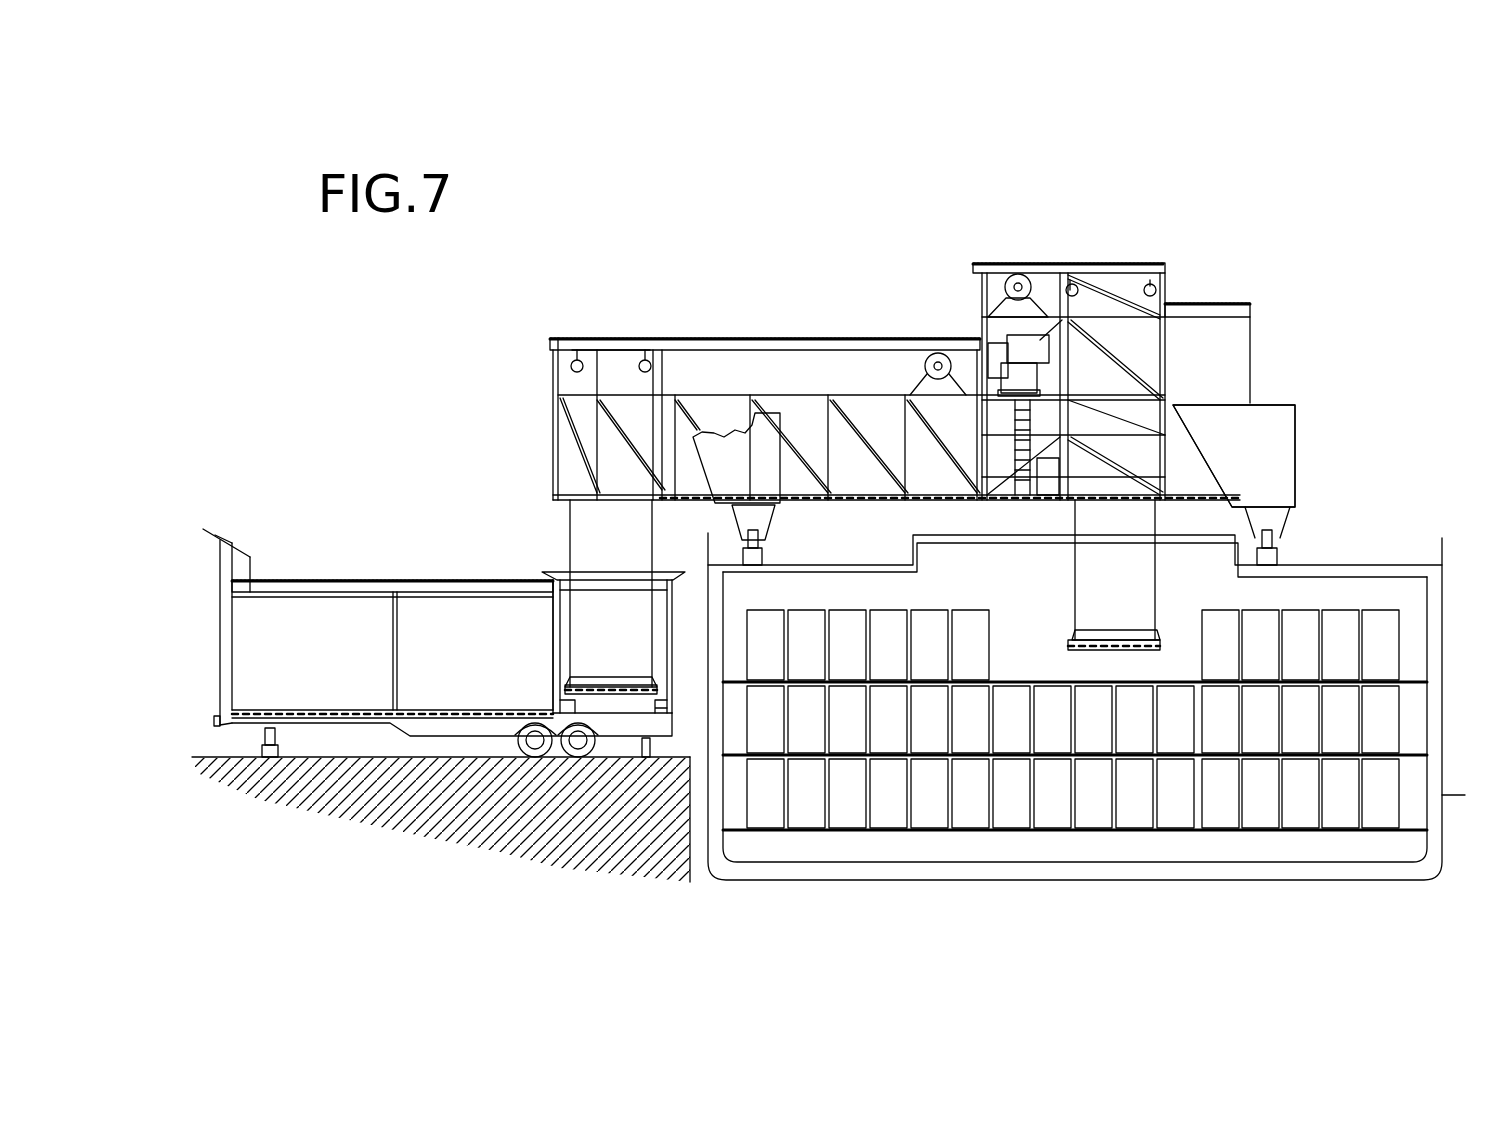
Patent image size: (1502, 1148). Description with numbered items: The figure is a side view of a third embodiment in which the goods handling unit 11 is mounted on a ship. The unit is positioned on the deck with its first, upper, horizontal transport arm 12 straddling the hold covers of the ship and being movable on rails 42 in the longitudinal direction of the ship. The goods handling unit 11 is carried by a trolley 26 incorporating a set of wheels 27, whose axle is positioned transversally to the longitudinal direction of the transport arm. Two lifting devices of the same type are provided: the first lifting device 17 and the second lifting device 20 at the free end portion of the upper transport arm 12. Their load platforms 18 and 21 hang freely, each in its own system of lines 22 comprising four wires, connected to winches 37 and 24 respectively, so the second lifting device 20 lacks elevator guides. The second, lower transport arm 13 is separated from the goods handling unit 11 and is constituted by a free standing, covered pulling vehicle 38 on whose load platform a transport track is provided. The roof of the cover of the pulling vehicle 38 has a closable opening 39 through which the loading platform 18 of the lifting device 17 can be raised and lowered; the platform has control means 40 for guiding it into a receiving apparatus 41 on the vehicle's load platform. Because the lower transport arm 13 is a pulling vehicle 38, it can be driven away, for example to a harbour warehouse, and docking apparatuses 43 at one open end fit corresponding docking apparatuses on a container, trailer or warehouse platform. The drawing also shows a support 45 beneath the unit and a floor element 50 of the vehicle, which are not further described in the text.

The goods handling unit 11 is at (724, 318).
The upper transport arm 12 is at (1312, 430).
The lower transport arm 13 is at (288, 568).
The lifting device 17 is at (600, 352).
The loading platform 18 is at (610, 683).
The second lifting device 20 is at (1117, 262).
The load platform 21 is at (1115, 640).
The system of lines 22 is at (566, 522).
The winch 24 is at (1008, 272).
The trolley 26 is at (1287, 492).
The set of wheels 27 is at (558, 758).
The winch 37 is at (932, 353).
The pulling vehicle 38 is at (366, 625).
The closable opening 39 is at (558, 565).
The control means 40 is at (548, 670).
The receiving apparatus 41 is at (560, 707).
The rails 42 is at (1280, 560).
The docking apparatuses 43 is at (214, 720).
The support leg 45 is at (760, 535).
The floor plate 50 is at (322, 708).